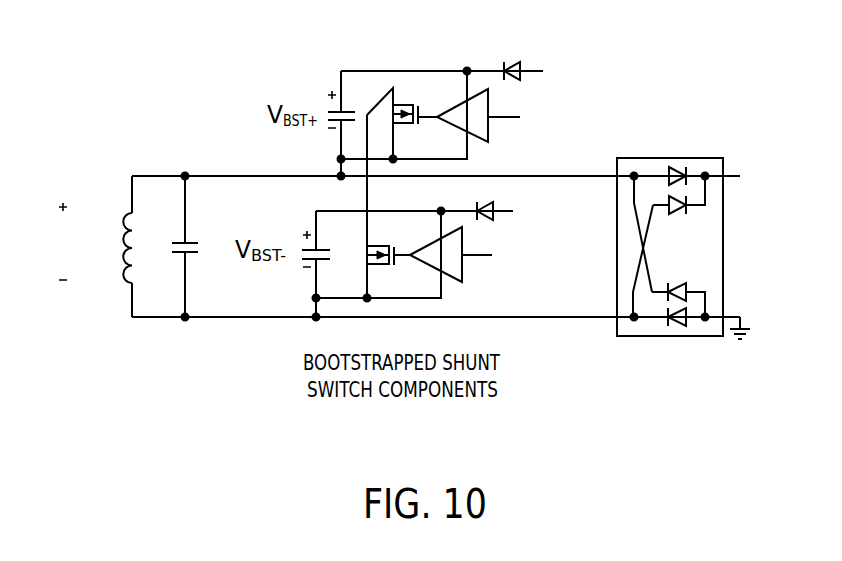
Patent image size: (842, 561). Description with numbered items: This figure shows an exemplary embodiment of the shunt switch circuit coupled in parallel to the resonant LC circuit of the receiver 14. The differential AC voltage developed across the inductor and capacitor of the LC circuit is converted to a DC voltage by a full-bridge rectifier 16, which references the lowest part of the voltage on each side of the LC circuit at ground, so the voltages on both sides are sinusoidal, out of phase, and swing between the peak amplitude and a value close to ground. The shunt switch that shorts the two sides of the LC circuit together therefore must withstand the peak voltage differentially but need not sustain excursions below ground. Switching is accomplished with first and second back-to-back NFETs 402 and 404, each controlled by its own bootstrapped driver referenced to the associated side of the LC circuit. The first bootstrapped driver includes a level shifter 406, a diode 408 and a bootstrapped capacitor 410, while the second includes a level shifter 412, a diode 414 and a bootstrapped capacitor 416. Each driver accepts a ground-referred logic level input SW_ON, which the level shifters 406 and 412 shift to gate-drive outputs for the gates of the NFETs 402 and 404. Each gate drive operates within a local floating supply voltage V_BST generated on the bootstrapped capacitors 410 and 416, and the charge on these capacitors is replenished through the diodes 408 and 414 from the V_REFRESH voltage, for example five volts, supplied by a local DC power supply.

The receiver 14 is at (190, 404).
The full-bridge rectifier 16 is at (705, 158).
The first NFET 402 is at (402, 106).
The second NFET 404 is at (377, 245).
The level shifter 406 is at (490, 129).
The diode 408 is at (511, 62).
The bootstrapped capacitor 410 is at (354, 110).
The level shifter 412 is at (465, 268).
The diode 414 is at (482, 201).
The bootstrapped capacitor 416 is at (303, 248).